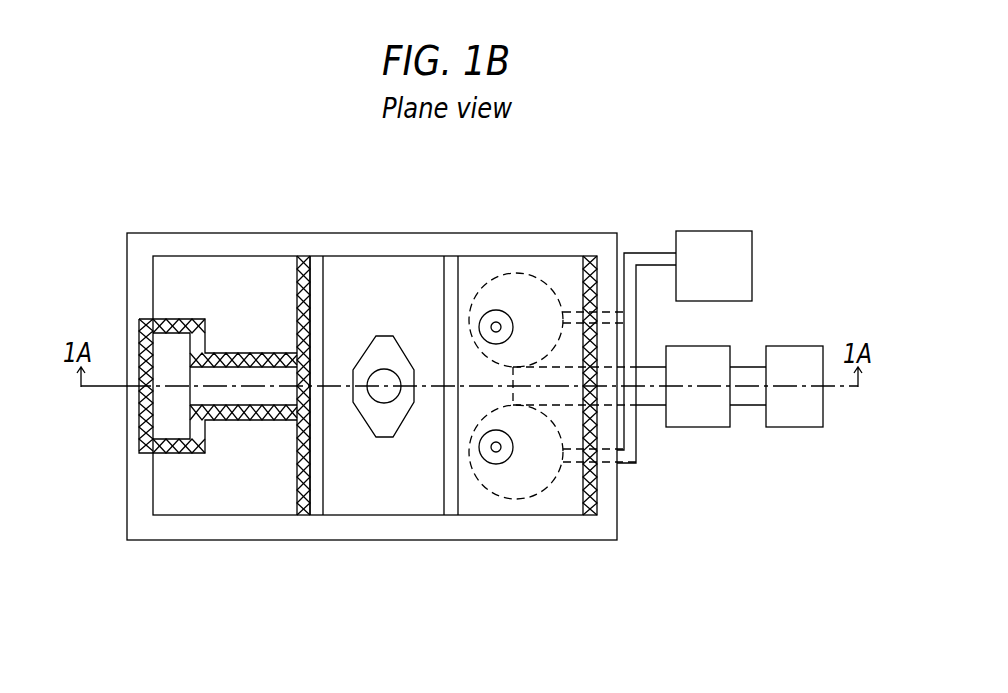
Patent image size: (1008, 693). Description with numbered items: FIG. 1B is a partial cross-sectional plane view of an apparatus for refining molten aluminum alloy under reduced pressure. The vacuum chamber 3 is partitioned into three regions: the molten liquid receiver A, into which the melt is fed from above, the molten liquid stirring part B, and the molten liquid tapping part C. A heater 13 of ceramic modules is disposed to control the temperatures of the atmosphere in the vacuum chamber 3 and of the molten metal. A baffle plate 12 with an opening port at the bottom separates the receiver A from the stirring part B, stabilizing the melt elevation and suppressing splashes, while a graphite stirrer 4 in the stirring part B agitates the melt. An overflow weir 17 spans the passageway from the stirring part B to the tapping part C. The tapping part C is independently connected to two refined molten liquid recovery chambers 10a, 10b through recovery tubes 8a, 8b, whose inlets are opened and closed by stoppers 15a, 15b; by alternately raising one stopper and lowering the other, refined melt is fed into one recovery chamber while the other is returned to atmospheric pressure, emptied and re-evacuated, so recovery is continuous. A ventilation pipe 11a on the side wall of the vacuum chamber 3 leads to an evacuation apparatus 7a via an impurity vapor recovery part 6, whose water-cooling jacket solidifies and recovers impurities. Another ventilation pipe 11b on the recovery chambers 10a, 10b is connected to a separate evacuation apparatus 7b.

The vacuum chamber 3 is at (155, 527).
The molten liquid receiver A is at (163, 425).
The heater 13 is at (303, 282).
The baffle plate 12 is at (317, 270).
The stirrer 4 is at (387, 335).
The overflow weir 17 is at (452, 487).
The molten liquid stirring part B is at (363, 498).
The molten liquid tapping part C is at (468, 408).
The recovery tube 8b is at (500, 312).
The stopper 15b is at (485, 318).
The refined molten liquid recovery chamber 10b is at (550, 285).
The recovery tube 8a is at (502, 452).
The stopper 15a is at (485, 455).
The refined molten liquid recovery chamber 10a is at (568, 465).
The ventilation pipe 11a is at (650, 377).
The ventilation pipe 11b is at (630, 452).
The evacuation apparatus 7b is at (740, 257).
The impurity vapor recovery part 6 is at (705, 427).
The evacuation apparatus 7a is at (800, 427).